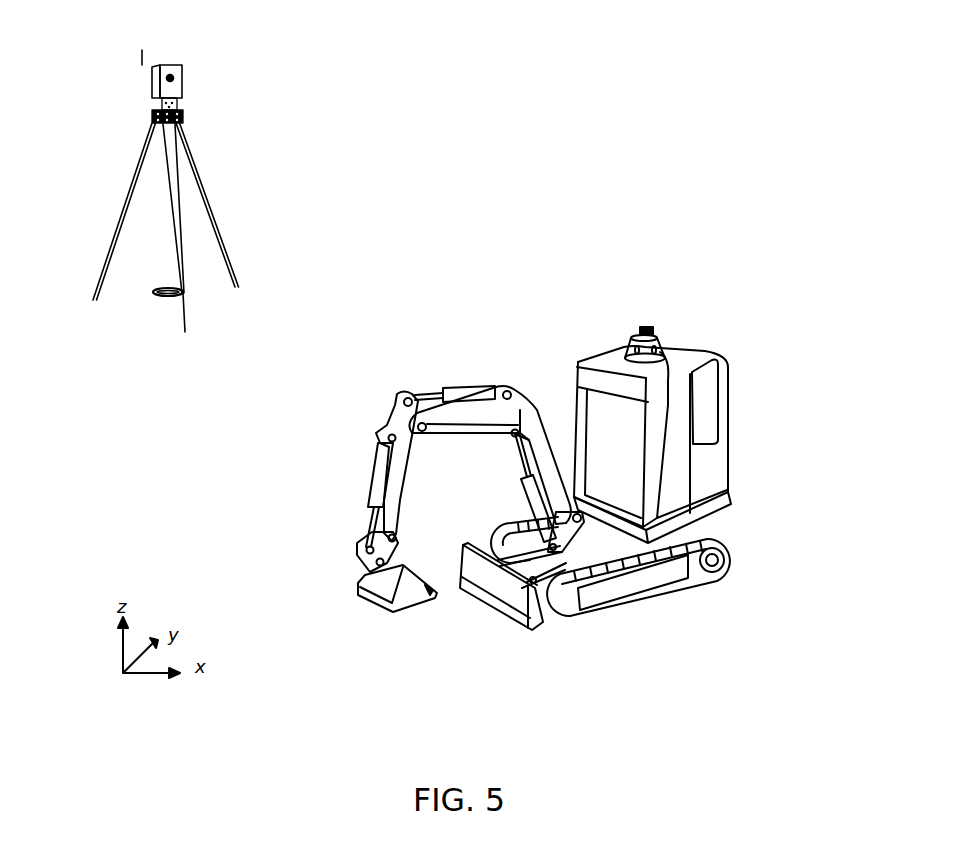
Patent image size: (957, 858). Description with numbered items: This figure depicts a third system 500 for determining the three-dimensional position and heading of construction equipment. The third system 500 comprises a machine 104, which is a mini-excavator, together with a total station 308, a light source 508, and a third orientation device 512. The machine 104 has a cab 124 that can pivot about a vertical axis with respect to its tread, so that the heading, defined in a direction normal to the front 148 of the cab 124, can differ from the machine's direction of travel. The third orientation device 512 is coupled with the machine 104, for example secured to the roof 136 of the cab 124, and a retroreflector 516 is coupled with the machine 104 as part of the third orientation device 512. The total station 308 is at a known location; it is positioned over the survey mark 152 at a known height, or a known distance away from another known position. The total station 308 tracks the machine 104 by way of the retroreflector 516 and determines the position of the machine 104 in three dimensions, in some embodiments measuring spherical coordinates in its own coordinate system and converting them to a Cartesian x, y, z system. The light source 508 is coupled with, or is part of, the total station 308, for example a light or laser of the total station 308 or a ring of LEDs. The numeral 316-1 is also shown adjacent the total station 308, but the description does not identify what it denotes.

The third system 500 is at (766, 196).
The survey mark 152 is at (152, 293).
The light source 508 is at (183, 113).
The total station 308 is at (183, 88).
The imaging device 316-1 is at (152, 82).
The cab 124 is at (581, 449).
The roof 136 is at (675, 359).
The front 148 is at (590, 401).
The third orientation device 512 is at (667, 350).
The retroreflector 516 is at (649, 331).
The machine 104 is at (732, 498).